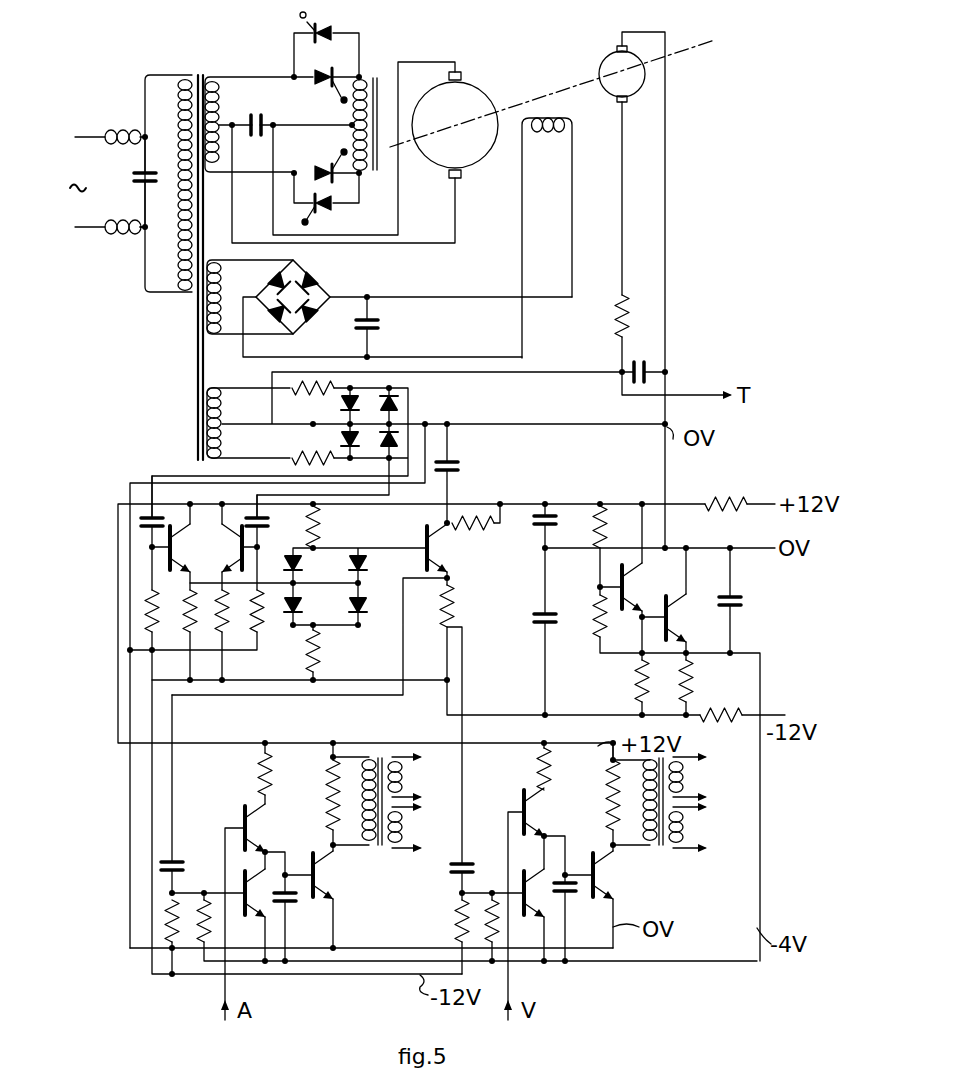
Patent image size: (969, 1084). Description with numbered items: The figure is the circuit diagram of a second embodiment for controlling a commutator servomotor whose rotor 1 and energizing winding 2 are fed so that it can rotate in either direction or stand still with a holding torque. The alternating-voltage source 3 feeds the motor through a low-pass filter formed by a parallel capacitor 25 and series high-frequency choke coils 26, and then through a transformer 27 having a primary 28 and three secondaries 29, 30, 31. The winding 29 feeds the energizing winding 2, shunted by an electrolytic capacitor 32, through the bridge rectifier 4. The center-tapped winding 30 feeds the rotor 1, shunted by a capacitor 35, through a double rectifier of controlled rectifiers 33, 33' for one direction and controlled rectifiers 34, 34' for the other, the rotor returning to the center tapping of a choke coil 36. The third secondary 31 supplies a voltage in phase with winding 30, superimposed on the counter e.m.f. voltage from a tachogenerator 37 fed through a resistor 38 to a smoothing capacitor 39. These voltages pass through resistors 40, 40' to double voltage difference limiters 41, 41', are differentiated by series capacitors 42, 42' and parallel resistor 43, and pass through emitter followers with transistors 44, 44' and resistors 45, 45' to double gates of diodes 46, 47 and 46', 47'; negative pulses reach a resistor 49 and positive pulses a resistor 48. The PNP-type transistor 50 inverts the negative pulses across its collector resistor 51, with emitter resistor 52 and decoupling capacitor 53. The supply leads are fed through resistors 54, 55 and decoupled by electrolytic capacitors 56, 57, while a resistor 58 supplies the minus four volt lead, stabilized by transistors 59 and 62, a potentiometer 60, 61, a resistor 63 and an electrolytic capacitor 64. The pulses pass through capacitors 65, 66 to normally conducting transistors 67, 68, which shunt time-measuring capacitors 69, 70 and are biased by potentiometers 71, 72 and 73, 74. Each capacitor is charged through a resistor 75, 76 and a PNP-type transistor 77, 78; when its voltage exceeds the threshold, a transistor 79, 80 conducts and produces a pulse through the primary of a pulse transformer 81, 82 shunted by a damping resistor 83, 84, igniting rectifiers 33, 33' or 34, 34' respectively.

The rotor 1 is at (464, 117).
The energizing winding 2 is at (548, 133).
The alternating-voltage source 3 is at (112, 144).
The bridge rectifier 4 is at (300, 308).
The parallel capacitor 25 is at (145, 227).
The high-frequency choke coils 26 is at (140, 178).
The transformer 27 is at (203, 82).
The primary 28 is at (180, 120).
The secondary winding 29 is at (222, 280).
The secondary winding 30 is at (221, 101).
The third secondary 31 is at (222, 428).
The electrolytic capacitor 32 is at (378, 326).
The controlled rectifier 33 is at (515, 434).
The controlled rectifier 33' is at (518, 500).
The controlled rectifier 34 is at (370, 401).
The controlled rectifier 34' is at (374, 523).
The capacitor 35 is at (292, 141).
The choke coil 36 is at (375, 78).
The tachogenerator 37 is at (610, 56).
The resistor 38 is at (614, 325).
The smoothing capacitor 39 is at (642, 360).
The resistor 40 is at (308, 403).
The resistor 40' is at (308, 447).
The double voltage difference limiter 41 is at (397, 413).
The double voltage difference limiter 41' is at (430, 426).
The series capacitor 42 is at (122, 508).
The series capacitor 42' is at (275, 517).
The parallel resistor 43 is at (148, 608).
The transistor 44 is at (197, 548).
The transistor 44' is at (219, 552).
The resistor 45 is at (178, 621).
The resistor 45' is at (243, 631).
The diode 46 is at (280, 564).
The diode 46' is at (342, 564).
The diode 47 is at (308, 607).
The diode 47' is at (376, 607).
The resistor 48 is at (318, 655).
The resistor 49 is at (318, 520).
The PNP-type transistor 50 is at (450, 550).
The collector resistor 51 is at (455, 595).
The resistor 52 is at (474, 531).
The decoupling capacitor 53 is at (453, 469).
The resistor 54 is at (726, 489).
The resistor 55 is at (734, 712).
The electrolytic capacitor 56 is at (532, 525).
The electrolytic capacitor 57 is at (539, 626).
The resistor 58 is at (690, 696).
The NPN-type transistor 59 is at (626, 594).
The potentiometer 60 is at (606, 514).
The potentiometer 61 is at (596, 628).
The NPN-type transistor 62 is at (668, 612).
The resistor 63 is at (636, 678).
The electrolytic capacitor 64 is at (738, 602).
The capacitor 65 is at (455, 870).
The capacitor 66 is at (184, 860).
The NPN-type transistor 67 is at (520, 898).
The NPN-type transistor 68 is at (239, 896).
The capacitor 69 is at (582, 900).
The capacitor 70 is at (296, 900).
The potentiometer 71 is at (454, 912).
The potentiometer 72 is at (486, 896).
The potentiometer 73 is at (168, 925).
The potentiometer 74 is at (208, 897).
The resistor 75 is at (538, 770).
The resistor 76 is at (262, 770).
The PNP-type transistor 77 is at (546, 812).
The PNP-type transistor 78 is at (265, 828).
The NPN-type transistor 79 is at (619, 880).
The NPN-type transistor 80 is at (339, 875).
The pulse transformer 81 is at (665, 846).
The pulse transformer 82 is at (380, 846).
The damping resistor 83 is at (606, 797).
The damping resistor 84 is at (328, 804).